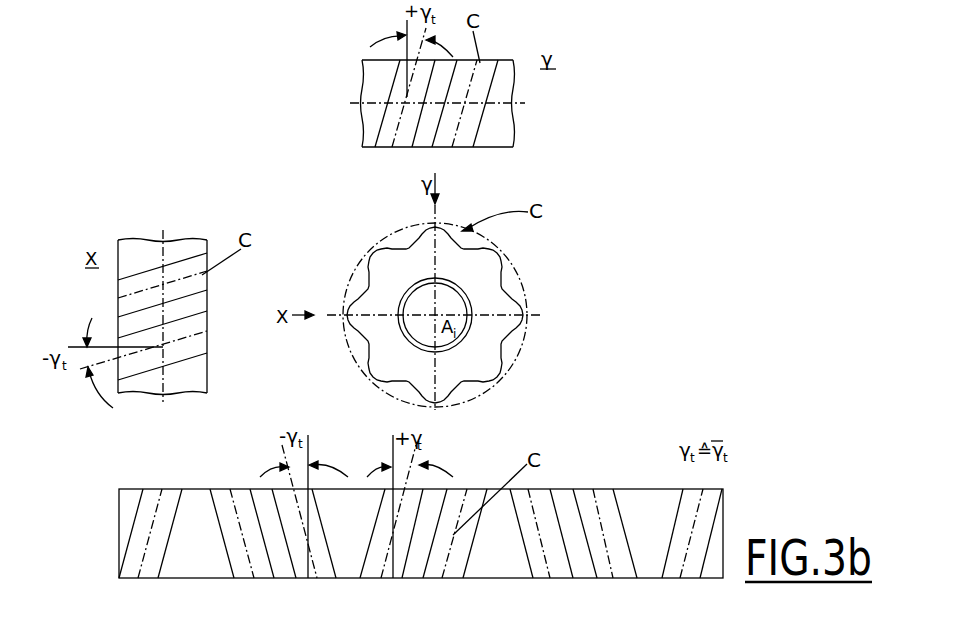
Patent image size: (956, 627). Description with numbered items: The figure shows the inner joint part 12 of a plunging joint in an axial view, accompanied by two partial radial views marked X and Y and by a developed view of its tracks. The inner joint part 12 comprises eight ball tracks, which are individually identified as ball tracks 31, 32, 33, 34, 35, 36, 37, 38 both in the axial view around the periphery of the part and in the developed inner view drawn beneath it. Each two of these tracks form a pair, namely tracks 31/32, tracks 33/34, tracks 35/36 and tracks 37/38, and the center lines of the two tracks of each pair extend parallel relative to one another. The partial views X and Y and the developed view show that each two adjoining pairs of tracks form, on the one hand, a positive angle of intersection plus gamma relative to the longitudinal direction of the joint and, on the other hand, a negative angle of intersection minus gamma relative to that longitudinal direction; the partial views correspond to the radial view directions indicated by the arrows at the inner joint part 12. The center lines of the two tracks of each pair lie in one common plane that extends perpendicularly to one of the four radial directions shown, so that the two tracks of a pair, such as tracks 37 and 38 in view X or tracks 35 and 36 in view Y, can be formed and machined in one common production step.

The inner joint part 12 is at (490, 273).
The ball track 31 is at (417, 388).
The ball track 32 is at (480, 388).
The ball track 33 is at (517, 358).
The ball track 34 is at (518, 307).
The ball track 35 is at (465, 146).
The ball track 36 is at (388, 143).
The ball track 37 is at (203, 283).
The ball track 38 is at (200, 348).